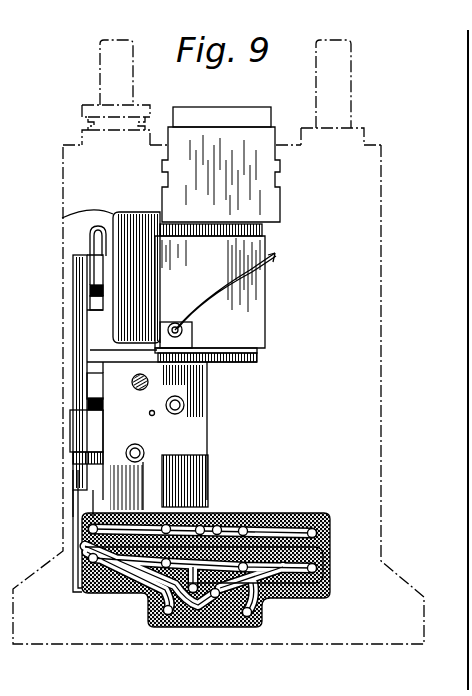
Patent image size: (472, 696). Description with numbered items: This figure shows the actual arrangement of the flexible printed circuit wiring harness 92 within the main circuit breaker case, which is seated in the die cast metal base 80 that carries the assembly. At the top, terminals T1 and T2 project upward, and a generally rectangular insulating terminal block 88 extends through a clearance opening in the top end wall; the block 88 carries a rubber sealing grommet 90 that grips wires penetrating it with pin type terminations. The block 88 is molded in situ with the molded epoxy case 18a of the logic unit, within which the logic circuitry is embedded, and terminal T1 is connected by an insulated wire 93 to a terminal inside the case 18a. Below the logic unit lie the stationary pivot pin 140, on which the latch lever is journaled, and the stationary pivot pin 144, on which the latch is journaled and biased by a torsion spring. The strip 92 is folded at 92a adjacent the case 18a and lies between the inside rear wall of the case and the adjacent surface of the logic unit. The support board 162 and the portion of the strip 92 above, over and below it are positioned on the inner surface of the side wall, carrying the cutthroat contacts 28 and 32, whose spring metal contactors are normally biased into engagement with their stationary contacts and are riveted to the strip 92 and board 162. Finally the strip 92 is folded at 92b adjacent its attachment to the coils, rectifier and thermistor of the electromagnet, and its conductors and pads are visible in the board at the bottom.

The die cast metal base 80 is at (106, 630).
The terminal T2 is at (102, 62).
The terminal T1 is at (336, 70).
The insulating terminal block 88 is at (277, 178).
The rubber sealing grommet 90 is at (239, 101).
The molded epoxy case of logic unit 18a is at (250, 283).
The insulated wire 93 is at (217, 292).
The stationary pivot pin 144 is at (185, 407).
The stationary pivot pin 140 is at (142, 449).
The fold of strip 92a is at (64, 247).
The support board 162 is at (84, 350).
The cutthroat contact 28 is at (92, 292).
The cutthroat contact 32 is at (90, 404).
The fold of strip 92b is at (73, 532).
The flexible printed circuit wiring harness 92 is at (300, 520).